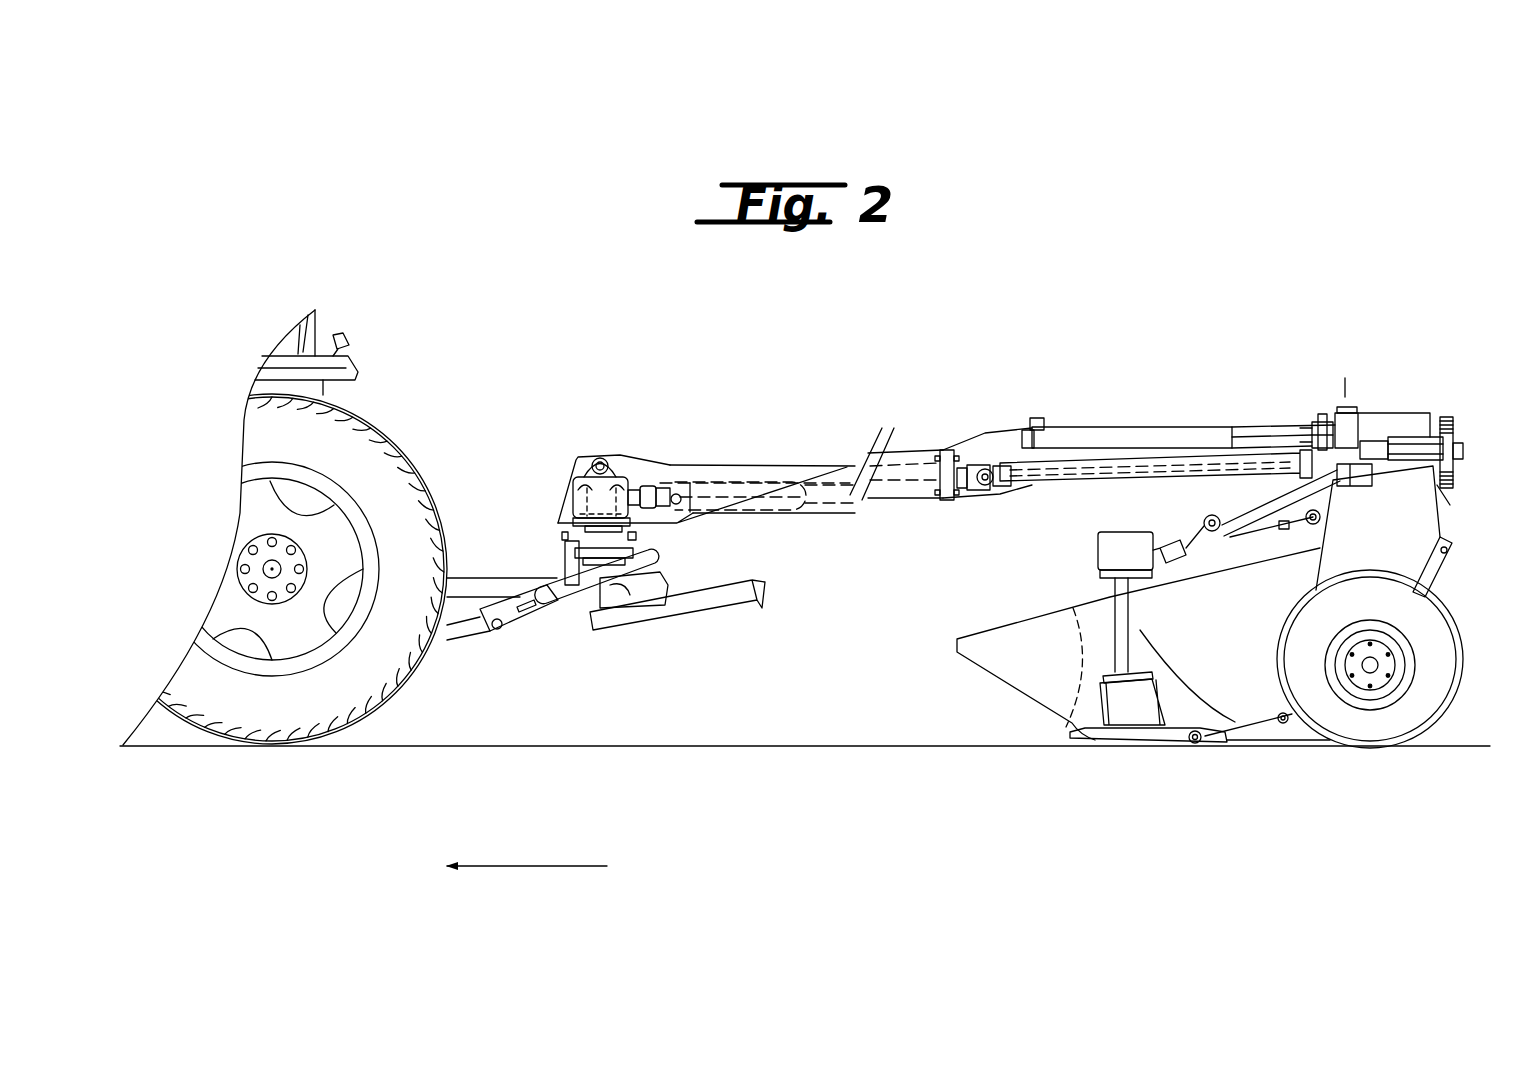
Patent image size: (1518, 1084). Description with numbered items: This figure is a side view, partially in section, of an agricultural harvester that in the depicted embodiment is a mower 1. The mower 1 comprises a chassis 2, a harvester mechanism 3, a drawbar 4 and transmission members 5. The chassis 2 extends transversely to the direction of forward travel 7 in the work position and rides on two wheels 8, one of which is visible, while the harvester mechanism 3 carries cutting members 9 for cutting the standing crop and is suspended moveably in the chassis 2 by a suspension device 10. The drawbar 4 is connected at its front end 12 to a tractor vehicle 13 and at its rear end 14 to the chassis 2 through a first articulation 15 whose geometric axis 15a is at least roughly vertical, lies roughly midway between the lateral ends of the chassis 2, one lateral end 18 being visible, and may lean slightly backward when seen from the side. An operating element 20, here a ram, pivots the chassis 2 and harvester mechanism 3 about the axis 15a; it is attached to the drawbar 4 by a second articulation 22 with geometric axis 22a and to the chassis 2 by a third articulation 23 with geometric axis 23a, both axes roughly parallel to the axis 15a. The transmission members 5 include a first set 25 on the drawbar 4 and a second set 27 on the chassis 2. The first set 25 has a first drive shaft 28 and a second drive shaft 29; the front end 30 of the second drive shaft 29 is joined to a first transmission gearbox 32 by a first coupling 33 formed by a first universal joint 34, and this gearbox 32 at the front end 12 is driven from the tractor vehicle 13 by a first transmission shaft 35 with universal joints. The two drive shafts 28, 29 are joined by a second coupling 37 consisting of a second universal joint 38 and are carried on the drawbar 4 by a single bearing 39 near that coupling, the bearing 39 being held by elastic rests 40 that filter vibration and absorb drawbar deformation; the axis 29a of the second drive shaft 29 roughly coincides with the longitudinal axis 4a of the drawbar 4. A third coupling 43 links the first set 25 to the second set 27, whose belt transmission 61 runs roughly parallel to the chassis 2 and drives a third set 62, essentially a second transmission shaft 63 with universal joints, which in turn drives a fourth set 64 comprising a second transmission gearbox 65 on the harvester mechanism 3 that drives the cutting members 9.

The mower 1 is at (849, 462).
The chassis 2 is at (1368, 566).
The harvester mechanism 3 is at (955, 650).
The drawbar 4 is at (771, 462).
The longitudinal axis of the drawbar 4a is at (828, 490).
The transmission members 5 is at (639, 470).
The direction of forward travel 7 is at (527, 866).
The wheels 8 is at (1347, 730).
The cutting members 9 is at (1112, 699).
The suspension device 10 is at (1263, 530).
The front end of the drawbar 12 is at (556, 487).
The tractor vehicle 13 is at (350, 367).
The rear end of the drawbar 14 is at (1372, 427).
The first articulation 15 is at (1348, 410).
The geometric axis of the first articulation 15a is at (1350, 387).
The lateral end of the chassis 18 is at (1440, 527).
The operating element 20 is at (1255, 425).
The second articulation 22 is at (1060, 420).
The geometric axis of the second articulation 22a is at (1038, 415).
The third articulation 23 is at (1307, 445).
The geometric axis of the third articulation 23a is at (1318, 398).
The first set 25 is at (875, 497).
The second set 27 is at (1415, 430).
The first drive shaft 28 is at (1168, 468).
The second drive shaft 29 is at (817, 500).
The axis of rotation of the second drive shaft 29a is at (910, 497).
The front end of the second drive shaft 30 is at (699, 514).
The first transmission gearbox 32 is at (598, 479).
The first coupling 33 is at (693, 473).
The first universal joint 34 is at (667, 486).
The first transmission shaft with universal joints 35 is at (473, 583).
The second coupling 37 is at (985, 452).
The second universal joint 38 is at (990, 468).
The bearing 39 is at (960, 492).
The elastic rests 40 is at (945, 455).
The third coupling 43 is at (1327, 414).
The belt transmission 61 is at (1452, 478).
The third set 62 is at (1290, 485).
The second transmission shaft with universal joints 63 is at (1282, 490).
The fourth set 64 is at (1110, 638).
The second transmission gearbox 65 is at (1105, 553).